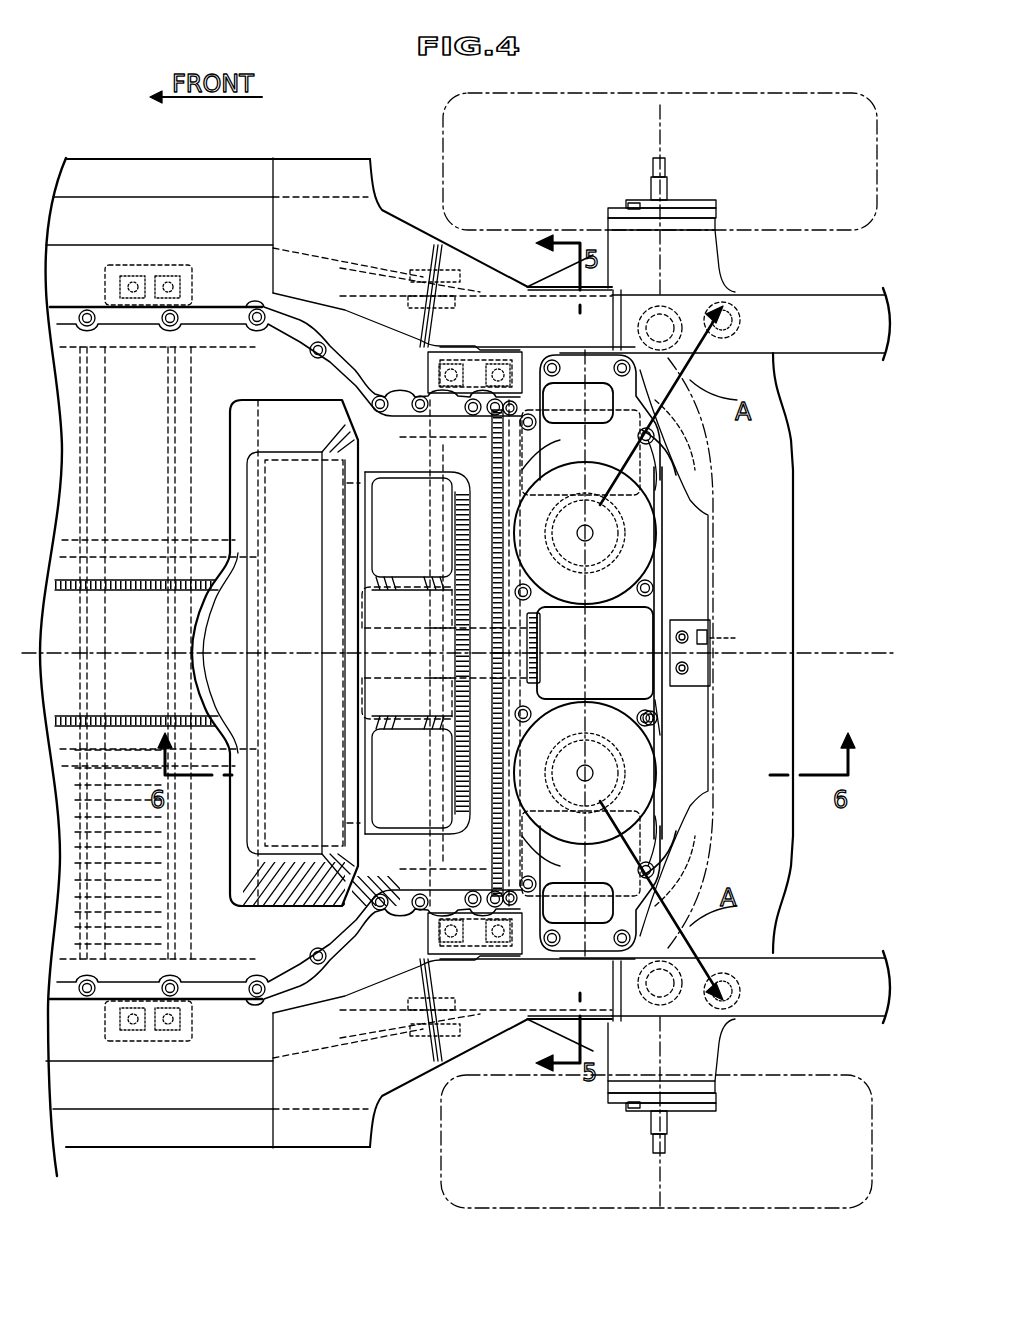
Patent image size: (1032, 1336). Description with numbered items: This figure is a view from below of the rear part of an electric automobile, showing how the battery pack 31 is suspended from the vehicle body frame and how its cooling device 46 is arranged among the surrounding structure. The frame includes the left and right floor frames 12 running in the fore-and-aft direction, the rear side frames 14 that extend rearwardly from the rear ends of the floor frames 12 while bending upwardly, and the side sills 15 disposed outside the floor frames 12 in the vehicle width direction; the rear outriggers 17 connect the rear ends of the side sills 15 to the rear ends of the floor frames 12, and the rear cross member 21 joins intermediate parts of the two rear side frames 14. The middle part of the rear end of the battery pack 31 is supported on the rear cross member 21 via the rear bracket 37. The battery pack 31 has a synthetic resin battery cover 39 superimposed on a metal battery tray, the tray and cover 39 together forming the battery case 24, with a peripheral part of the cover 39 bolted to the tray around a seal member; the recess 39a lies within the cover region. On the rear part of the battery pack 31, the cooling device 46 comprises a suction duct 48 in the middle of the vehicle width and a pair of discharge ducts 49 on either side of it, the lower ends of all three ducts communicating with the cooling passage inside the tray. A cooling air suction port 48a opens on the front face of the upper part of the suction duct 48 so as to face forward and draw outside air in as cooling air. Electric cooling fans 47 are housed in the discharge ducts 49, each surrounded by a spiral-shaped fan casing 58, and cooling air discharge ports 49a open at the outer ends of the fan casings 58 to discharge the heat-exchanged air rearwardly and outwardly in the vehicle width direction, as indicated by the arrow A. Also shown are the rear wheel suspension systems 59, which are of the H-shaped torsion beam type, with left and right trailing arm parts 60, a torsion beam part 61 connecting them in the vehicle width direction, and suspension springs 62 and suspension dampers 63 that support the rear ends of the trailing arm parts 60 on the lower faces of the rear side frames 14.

The floor frame 12 is at (100, 255).
The rear side frame 14 is at (830, 310).
The side sill 15 is at (172, 176).
The rear outrigger 17 is at (385, 226).
The rear cross member 21 is at (786, 566).
The battery case 24 is at (316, 326).
The battery pack 31 is at (216, 285).
The rear bracket 37 is at (715, 660).
The battery cover 39 is at (213, 1007).
The floor recess 39a is at (347, 653).
The cooling device 46 is at (688, 526).
The cooling fan 47 is at (625, 510).
The suction duct 48 is at (665, 617).
The cooling air suction port 48a is at (525, 628).
The discharge duct 49 is at (575, 400).
The cooling air discharge port 49a is at (660, 465).
The fan casing 58 is at (640, 543).
The suspension system 59 is at (540, 262).
The trailing arm part 60 is at (471, 290).
The torsion beam part 61 is at (662, 720).
The suspension spring 62 is at (673, 305).
The suspension damper 63 is at (738, 326).